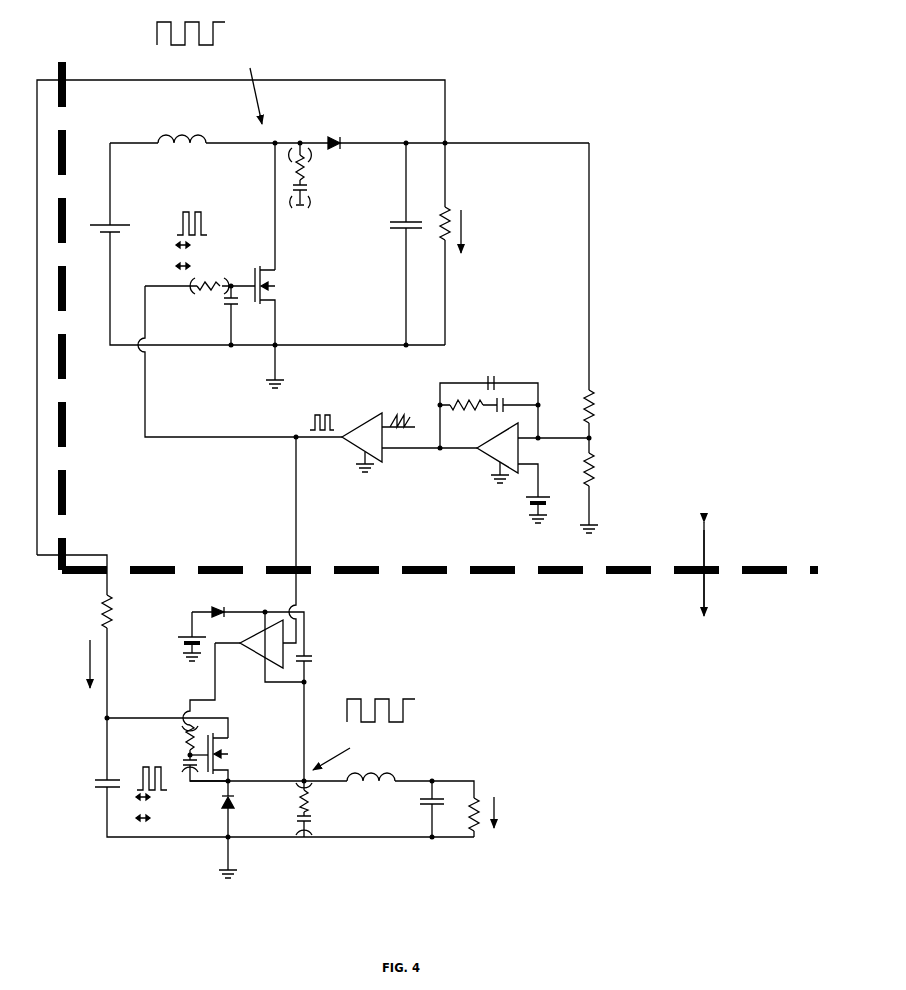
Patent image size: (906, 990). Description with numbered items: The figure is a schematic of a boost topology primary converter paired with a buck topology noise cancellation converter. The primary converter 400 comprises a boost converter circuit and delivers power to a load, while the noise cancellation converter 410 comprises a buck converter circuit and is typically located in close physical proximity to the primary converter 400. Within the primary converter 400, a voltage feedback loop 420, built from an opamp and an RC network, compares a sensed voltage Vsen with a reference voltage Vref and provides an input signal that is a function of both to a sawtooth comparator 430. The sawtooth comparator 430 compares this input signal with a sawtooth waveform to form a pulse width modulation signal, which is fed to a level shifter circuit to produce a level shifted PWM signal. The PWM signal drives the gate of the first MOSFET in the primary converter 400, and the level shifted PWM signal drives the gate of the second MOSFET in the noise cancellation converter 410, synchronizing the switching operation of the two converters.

The primary converter 400 is at (414, 285).
The noise cancellation converter 410 is at (420, 657).
The voltage feedback loop 420 is at (485, 440).
The sawtooth comparator 430 is at (362, 472).